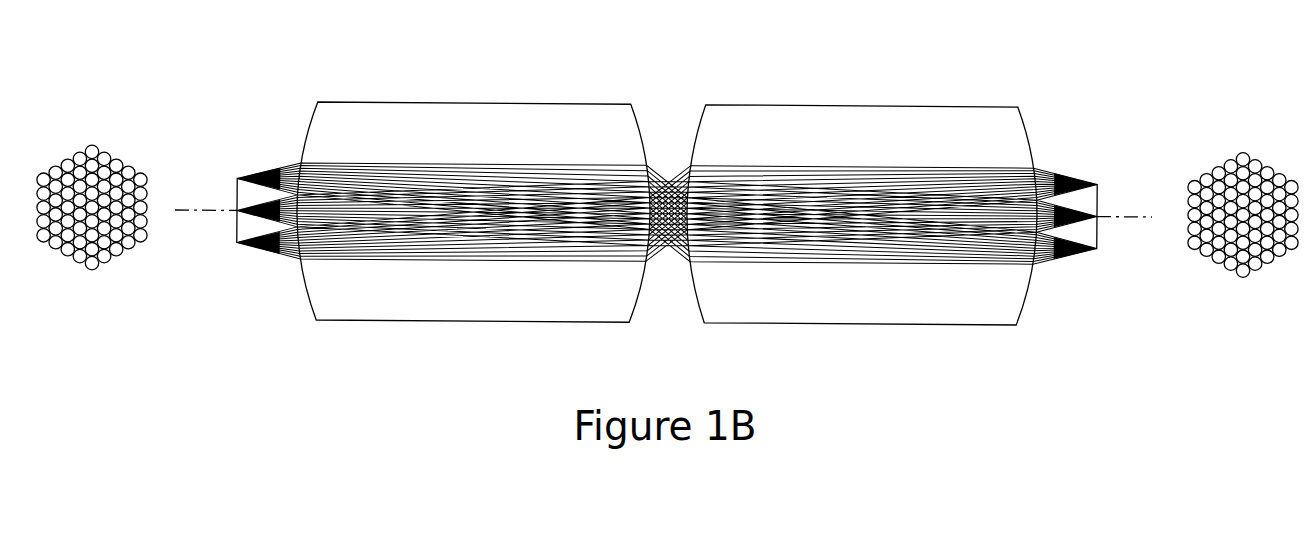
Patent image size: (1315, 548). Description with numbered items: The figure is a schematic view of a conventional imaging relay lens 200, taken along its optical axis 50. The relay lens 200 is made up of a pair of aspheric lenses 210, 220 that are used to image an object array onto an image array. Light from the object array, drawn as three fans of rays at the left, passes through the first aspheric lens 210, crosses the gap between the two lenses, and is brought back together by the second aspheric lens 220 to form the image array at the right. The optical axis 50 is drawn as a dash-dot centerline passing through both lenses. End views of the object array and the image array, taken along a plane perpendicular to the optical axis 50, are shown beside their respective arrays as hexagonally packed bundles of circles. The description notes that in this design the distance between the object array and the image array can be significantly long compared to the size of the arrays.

The imaging relay lens 200 is at (205, 80).
The optical axis 50 is at (208, 213).
The aspheric lens 210 is at (367, 321).
The aspheric lens 220 is at (965, 325).